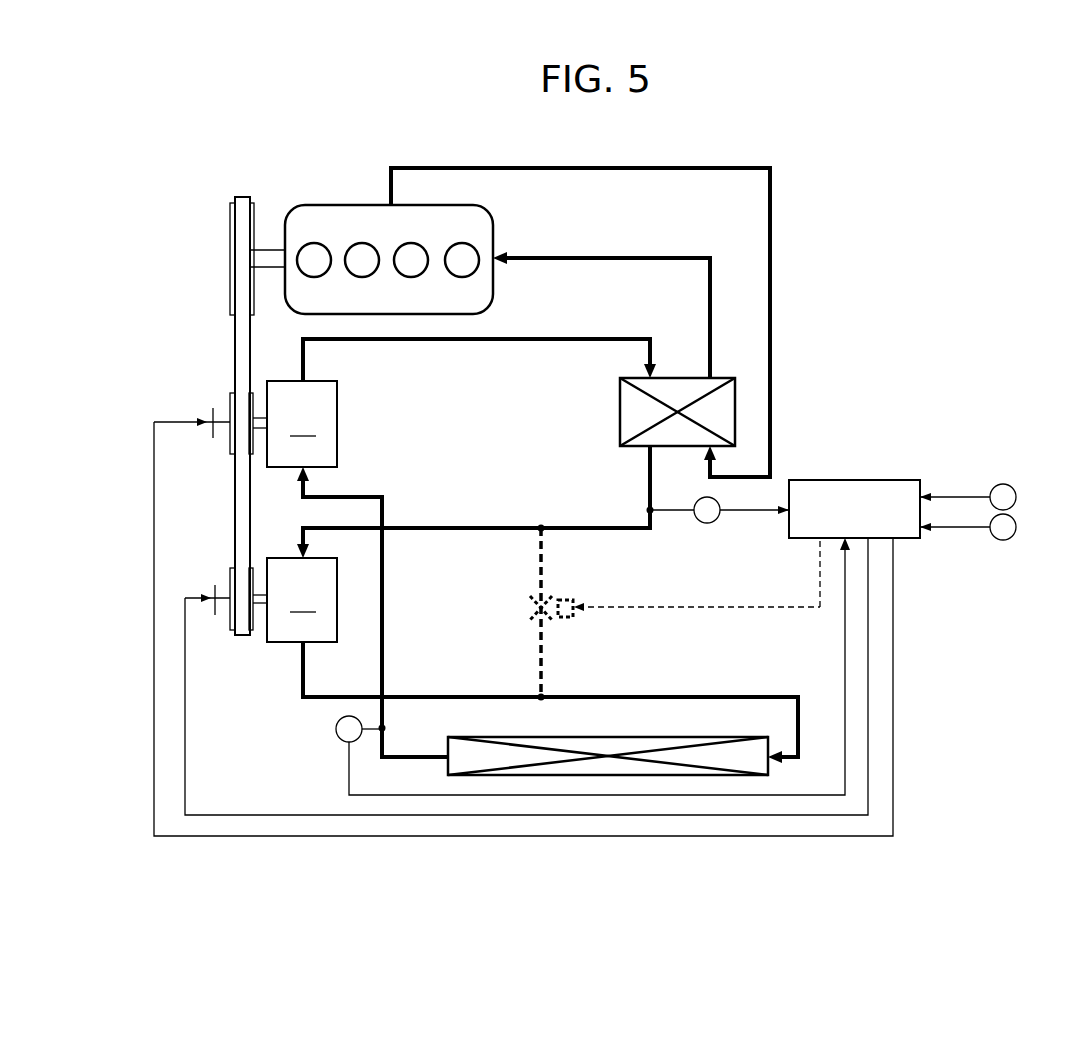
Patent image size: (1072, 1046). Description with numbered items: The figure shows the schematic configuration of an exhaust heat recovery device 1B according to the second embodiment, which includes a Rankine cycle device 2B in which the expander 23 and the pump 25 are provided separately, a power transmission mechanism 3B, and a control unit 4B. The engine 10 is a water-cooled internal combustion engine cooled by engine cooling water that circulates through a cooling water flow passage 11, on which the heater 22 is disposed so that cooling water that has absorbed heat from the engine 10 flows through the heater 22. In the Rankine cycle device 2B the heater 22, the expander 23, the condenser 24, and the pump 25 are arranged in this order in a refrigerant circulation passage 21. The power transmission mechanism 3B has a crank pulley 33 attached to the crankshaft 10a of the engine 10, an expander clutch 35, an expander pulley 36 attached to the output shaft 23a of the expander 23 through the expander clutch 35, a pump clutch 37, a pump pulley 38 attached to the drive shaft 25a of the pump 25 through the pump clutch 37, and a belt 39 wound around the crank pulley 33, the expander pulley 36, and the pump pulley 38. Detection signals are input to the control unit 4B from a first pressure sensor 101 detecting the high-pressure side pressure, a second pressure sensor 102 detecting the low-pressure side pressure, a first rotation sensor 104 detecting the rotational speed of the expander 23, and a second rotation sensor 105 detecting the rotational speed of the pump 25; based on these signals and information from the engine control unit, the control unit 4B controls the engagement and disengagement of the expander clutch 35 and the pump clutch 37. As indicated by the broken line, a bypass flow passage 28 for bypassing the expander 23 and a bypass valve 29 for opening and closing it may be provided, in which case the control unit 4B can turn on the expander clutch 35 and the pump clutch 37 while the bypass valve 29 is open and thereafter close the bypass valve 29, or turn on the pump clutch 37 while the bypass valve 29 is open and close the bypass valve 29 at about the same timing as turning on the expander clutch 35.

The exhaust heat recovery device 1B is at (848, 146).
The Rankine cycle device 2B is at (278, 710).
The power transmission mechanism 3B is at (138, 312).
The control unit 4B is at (856, 478).
The engine 10 is at (493, 224).
The crankshaft 10a is at (268, 267).
The cooling water flow passage 11 is at (773, 252).
The refrigerant circulation passage 21 is at (540, 334).
The heater 22 is at (672, 376).
The expander 23 is at (302, 600).
The output shaft 23a is at (260, 603).
The condenser 24 is at (596, 737).
The pump 25 is at (302, 424).
The drive shaft 25a is at (262, 428).
The bypass flow passage 28 is at (538, 570).
The bypass valve 29 is at (528, 612).
The crank pulley 33 is at (232, 242).
The expander clutch 35 is at (215, 615).
The expander pulley 36 is at (232, 578).
The pump clutch 37 is at (213, 438).
The pump pulley 38 is at (232, 402).
The belt 39 is at (232, 332).
The first pressure sensor 101 is at (702, 523).
The second pressure sensor 102 is at (338, 732).
The first rotation sensor 104 is at (1006, 540).
The second rotation sensor 105 is at (1006, 484).